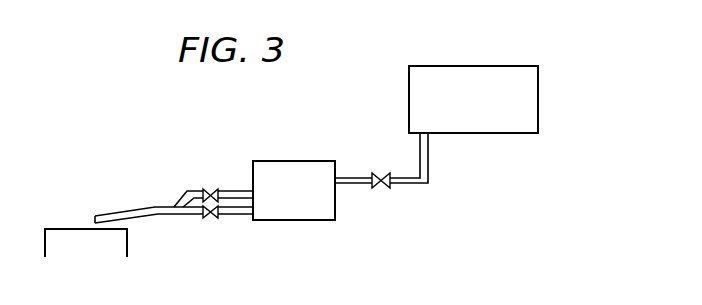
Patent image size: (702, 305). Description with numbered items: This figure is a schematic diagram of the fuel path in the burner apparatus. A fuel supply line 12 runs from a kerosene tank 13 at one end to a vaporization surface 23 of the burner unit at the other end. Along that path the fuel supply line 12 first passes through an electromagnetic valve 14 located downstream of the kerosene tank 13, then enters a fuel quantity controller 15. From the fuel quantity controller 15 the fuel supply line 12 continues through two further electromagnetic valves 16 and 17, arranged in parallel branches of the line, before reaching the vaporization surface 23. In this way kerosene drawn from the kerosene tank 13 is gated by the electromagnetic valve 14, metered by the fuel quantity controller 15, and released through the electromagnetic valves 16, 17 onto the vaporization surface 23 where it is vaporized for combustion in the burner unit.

The fuel supply line 12 is at (118, 214).
The kerosene tank 13 is at (538, 98).
The electromagnetic valve 14 is at (381, 189).
The fuel quantity controller 15 is at (288, 221).
The electromagnetic valve 16 is at (210, 219).
The electromagnetic valve 17 is at (211, 188).
The vaporization surface 23 is at (62, 233).